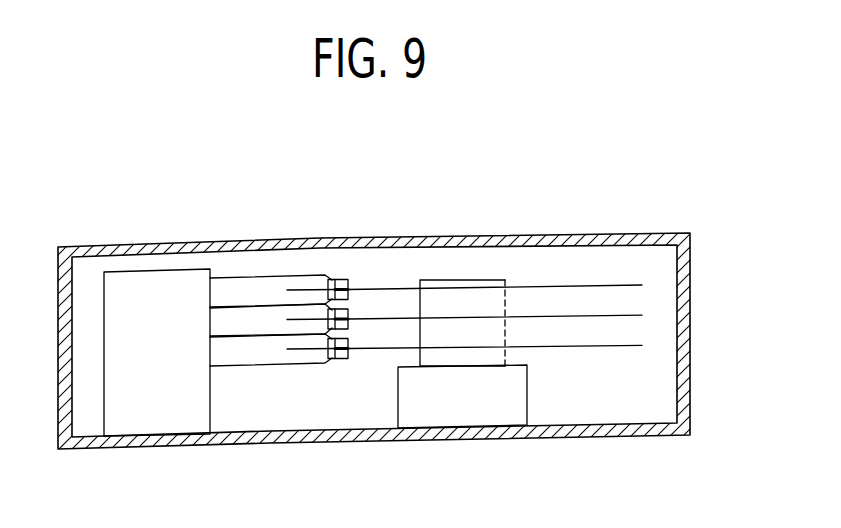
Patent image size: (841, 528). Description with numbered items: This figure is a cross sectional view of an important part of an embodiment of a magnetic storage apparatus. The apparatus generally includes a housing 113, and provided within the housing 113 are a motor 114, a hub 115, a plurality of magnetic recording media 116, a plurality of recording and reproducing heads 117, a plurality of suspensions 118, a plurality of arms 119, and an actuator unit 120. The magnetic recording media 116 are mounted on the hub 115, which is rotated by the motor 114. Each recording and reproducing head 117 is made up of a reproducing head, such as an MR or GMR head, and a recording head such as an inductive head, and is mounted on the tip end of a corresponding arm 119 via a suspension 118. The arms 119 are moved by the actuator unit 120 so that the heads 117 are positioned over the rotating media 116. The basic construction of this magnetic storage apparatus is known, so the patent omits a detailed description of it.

The housing 113 is at (682, 410).
The motor 114 is at (467, 427).
The hub 115 is at (462, 278).
The magnetic recording media 116 is at (577, 280).
The recording and reproducing heads 117 is at (350, 268).
The suspensions 118 is at (325, 277).
The arms 119 is at (245, 276).
The actuator unit 120 is at (152, 436).